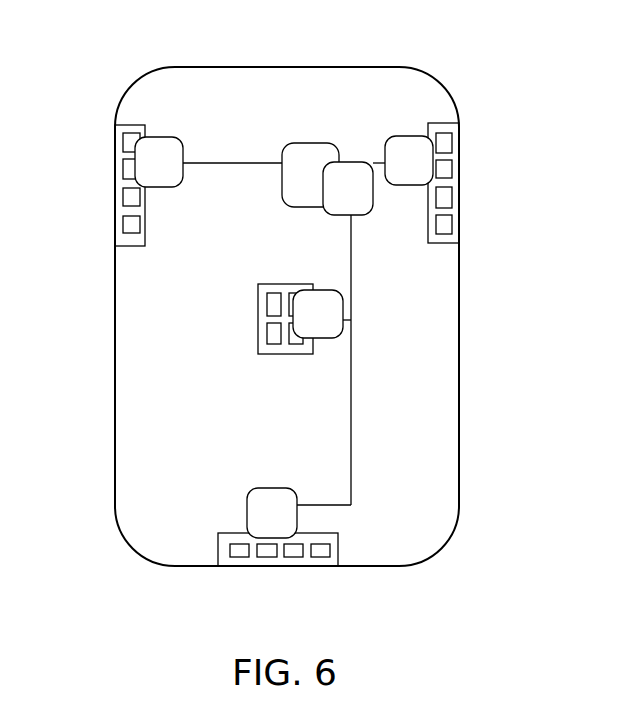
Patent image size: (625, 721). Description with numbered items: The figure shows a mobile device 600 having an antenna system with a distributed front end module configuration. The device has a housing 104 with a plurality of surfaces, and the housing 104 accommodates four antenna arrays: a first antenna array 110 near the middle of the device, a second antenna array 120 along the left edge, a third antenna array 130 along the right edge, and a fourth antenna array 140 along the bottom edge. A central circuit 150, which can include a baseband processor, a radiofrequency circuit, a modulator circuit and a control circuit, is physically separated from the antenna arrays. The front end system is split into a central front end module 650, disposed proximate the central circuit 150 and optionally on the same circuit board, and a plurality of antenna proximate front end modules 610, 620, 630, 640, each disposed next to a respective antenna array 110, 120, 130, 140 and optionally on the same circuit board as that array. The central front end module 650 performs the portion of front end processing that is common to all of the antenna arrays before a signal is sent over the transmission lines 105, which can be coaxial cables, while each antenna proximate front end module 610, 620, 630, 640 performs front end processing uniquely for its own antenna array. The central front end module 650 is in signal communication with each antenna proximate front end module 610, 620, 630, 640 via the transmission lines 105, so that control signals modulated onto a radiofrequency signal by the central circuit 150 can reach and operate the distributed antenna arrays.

The mobile device 600 is at (137, 49).
The housing 104 is at (400, 67).
The transmission lines 105 is at (222, 163).
The first antenna array 110 is at (262, 320).
The second antenna array 120 is at (122, 185).
The third antenna array 130 is at (458, 186).
The fourth antenna array 140 is at (280, 560).
The central circuit 150 is at (313, 143).
The antenna proximate front end module 610 is at (320, 290).
The antenna proximate front end module 620 is at (185, 190).
The antenna proximate front end module 630 is at (405, 136).
The antenna proximate front end module 640 is at (272, 488).
The central front end module 650 is at (368, 214).